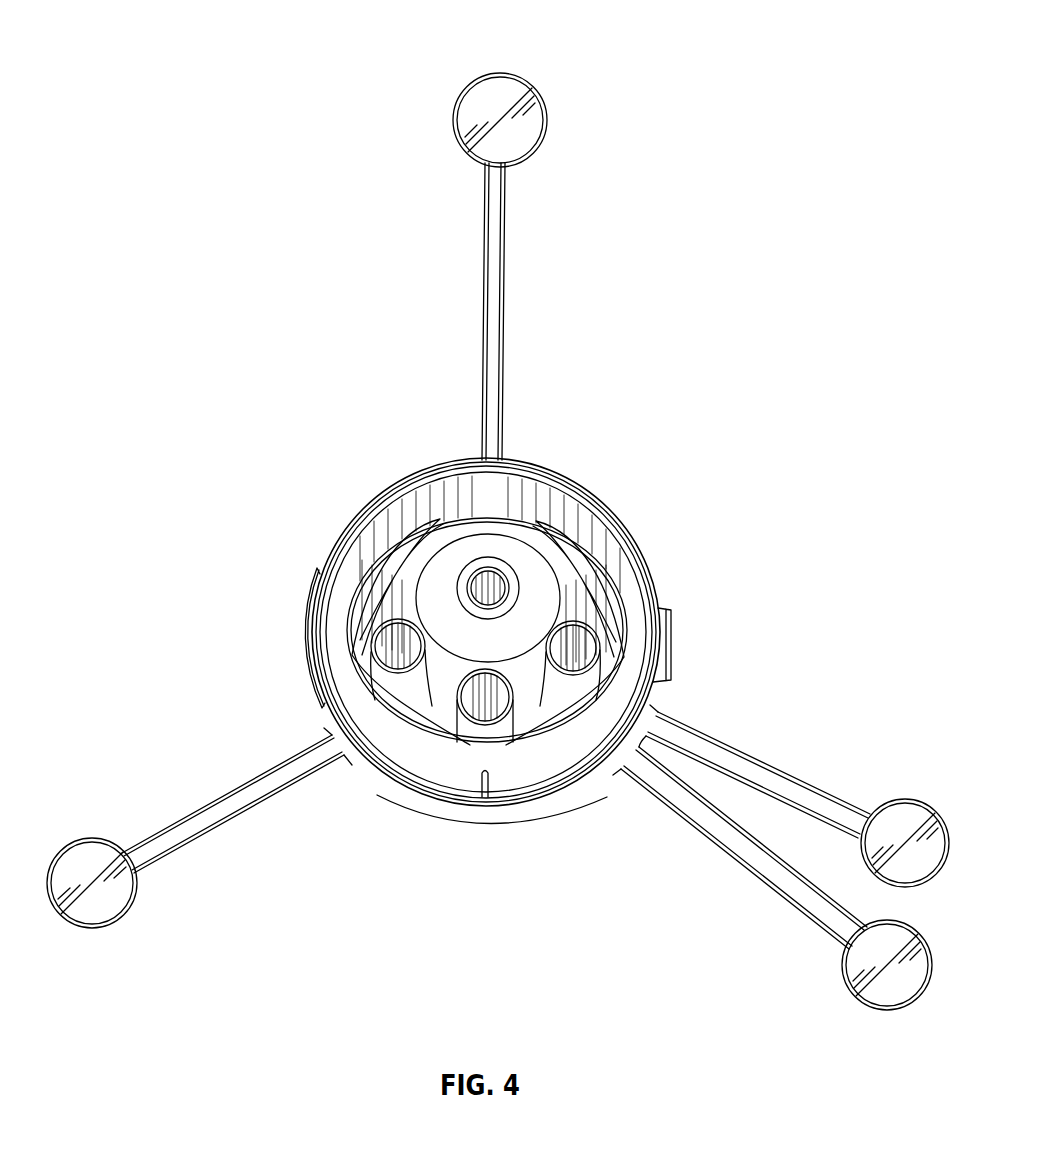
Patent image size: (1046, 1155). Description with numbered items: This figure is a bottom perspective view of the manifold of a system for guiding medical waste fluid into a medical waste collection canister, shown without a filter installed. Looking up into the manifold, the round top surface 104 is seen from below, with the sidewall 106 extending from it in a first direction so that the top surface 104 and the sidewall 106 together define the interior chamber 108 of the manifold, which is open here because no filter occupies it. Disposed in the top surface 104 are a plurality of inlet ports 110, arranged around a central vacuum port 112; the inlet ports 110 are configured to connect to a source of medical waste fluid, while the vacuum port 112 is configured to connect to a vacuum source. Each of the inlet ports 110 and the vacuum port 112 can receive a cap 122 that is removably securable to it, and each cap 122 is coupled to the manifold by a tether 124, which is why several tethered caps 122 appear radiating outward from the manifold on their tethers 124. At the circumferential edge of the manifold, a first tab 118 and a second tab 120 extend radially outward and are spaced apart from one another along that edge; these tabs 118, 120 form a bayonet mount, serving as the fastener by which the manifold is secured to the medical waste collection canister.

The top surface 104 is at (633, 547).
The sidewall 106 is at (632, 657).
The interior chamber 108 is at (446, 496).
The inlet port 110 is at (397, 693).
The vacuum port 112 is at (493, 587).
The first tab 118 is at (304, 632).
The second tab 120 is at (672, 665).
The cap 122 is at (497, 73).
The tether 124 is at (512, 223).